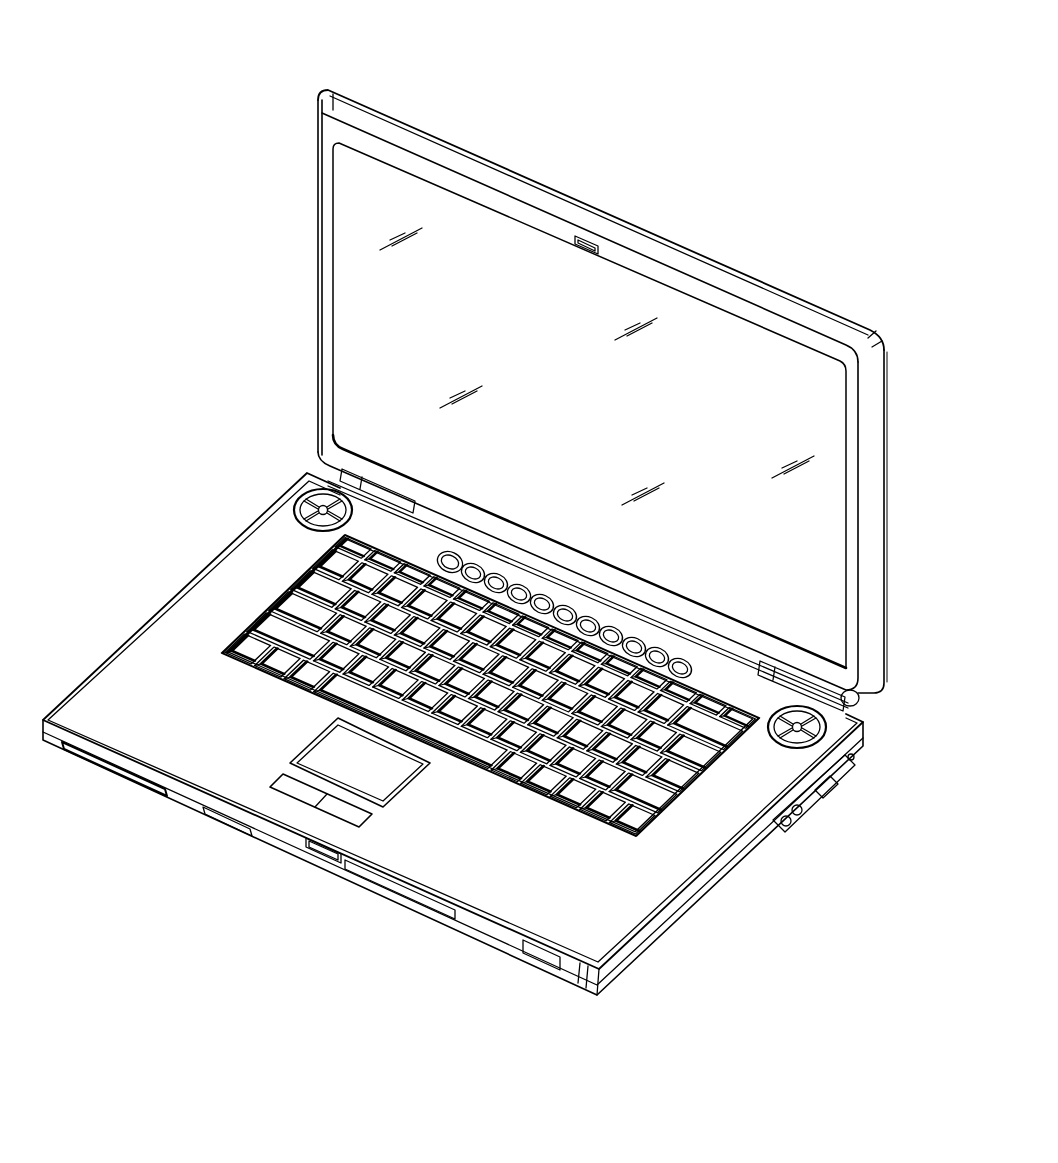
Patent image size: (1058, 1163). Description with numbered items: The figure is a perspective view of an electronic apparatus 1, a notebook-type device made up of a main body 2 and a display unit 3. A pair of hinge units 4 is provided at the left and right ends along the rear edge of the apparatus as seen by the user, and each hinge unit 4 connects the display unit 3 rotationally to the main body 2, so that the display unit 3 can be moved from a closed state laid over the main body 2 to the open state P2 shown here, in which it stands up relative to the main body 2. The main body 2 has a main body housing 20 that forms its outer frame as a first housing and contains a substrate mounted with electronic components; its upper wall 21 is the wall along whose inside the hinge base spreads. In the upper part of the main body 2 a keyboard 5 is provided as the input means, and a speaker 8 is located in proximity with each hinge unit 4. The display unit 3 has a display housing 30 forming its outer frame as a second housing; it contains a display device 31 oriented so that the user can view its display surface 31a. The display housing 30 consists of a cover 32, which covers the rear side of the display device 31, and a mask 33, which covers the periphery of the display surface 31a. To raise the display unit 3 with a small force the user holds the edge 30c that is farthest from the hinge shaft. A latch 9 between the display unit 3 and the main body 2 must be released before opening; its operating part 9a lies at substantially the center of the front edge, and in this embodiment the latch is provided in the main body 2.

The electronic apparatus 1 is at (652, 86).
The main body 2 is at (166, 564).
The display unit 3 is at (315, 221).
The hinge unit 4 is at (396, 477).
The keyboard 5 is at (674, 806).
The speaker 8 is at (305, 497).
The latch 9 is at (590, 237).
The operating part 9a is at (315, 852).
The main body housing 20 is at (487, 950).
The upper wall 21 is at (605, 919).
The display housing 30 is at (877, 460).
The edge 30c is at (468, 165).
The display device 31 is at (700, 328).
The display surface 31a is at (746, 375).
The cover 32 is at (402, 112).
The mask 33 is at (326, 347).
The open state P2 is at (316, 128).